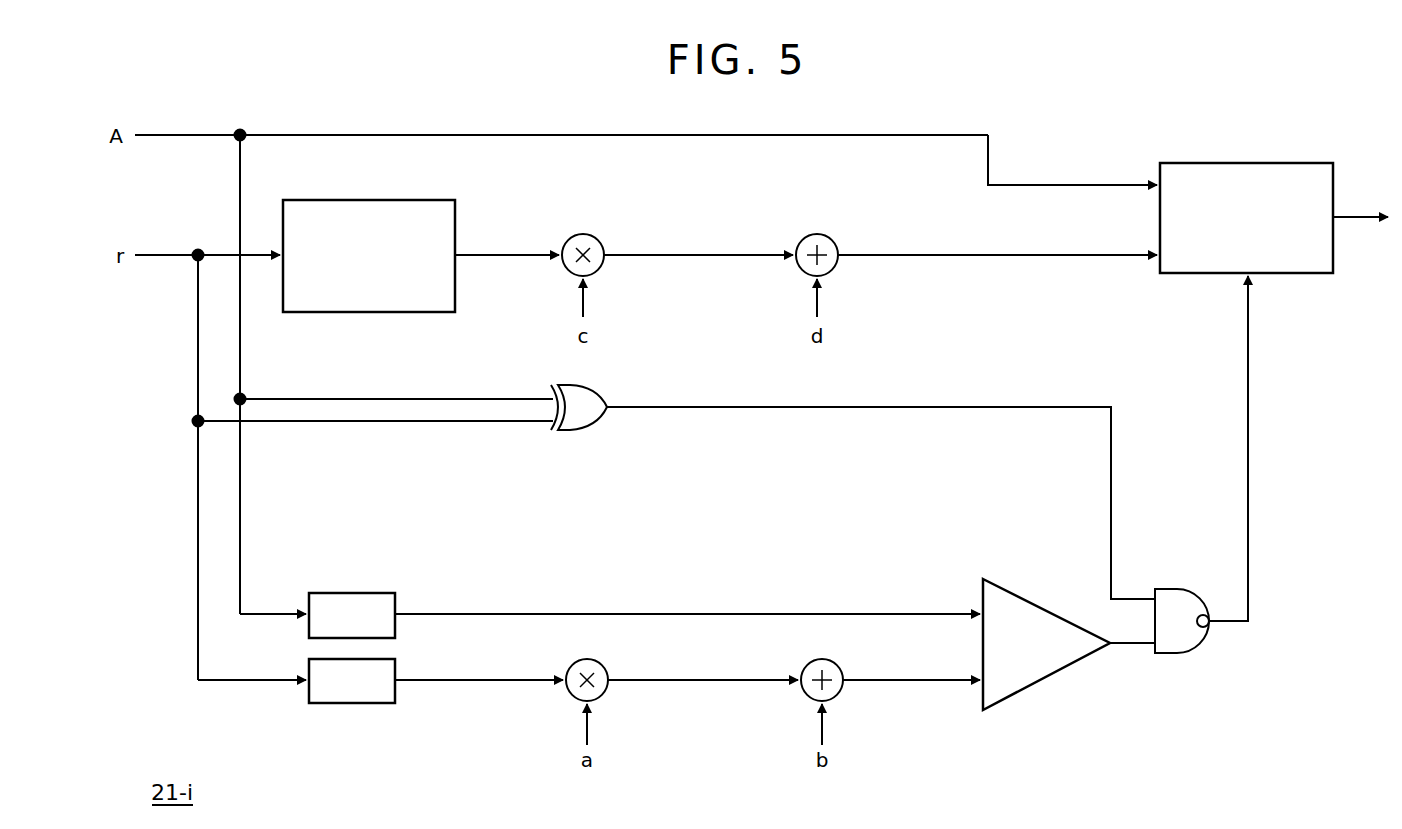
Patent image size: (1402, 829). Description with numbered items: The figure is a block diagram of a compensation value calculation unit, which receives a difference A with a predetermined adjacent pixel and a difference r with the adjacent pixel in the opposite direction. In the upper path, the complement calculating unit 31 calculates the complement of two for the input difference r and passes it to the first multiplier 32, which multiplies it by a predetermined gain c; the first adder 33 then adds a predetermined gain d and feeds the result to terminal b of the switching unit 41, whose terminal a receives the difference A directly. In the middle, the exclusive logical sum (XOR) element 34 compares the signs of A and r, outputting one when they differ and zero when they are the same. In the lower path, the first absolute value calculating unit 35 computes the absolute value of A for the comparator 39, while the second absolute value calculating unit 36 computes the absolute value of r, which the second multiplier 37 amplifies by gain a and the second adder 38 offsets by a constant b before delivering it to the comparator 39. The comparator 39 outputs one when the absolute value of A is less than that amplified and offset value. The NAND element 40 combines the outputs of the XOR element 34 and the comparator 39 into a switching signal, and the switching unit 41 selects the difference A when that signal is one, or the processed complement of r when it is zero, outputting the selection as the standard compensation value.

The complement calculating unit 31 is at (370, 200).
The first multiplier 32 is at (583, 234).
The first adder 33 is at (817, 234).
The exclusive logical sum (XOR) element 34 is at (593, 425).
The first absolute value calculating unit 35 is at (352, 593).
The second absolute value calculating unit 36 is at (352, 703).
The second multiplier 37 is at (602, 695).
The second adder 38 is at (837, 695).
The comparator 39 is at (1046, 680).
The NAND element 40 is at (1186, 646).
The switching unit 41 is at (1248, 163).